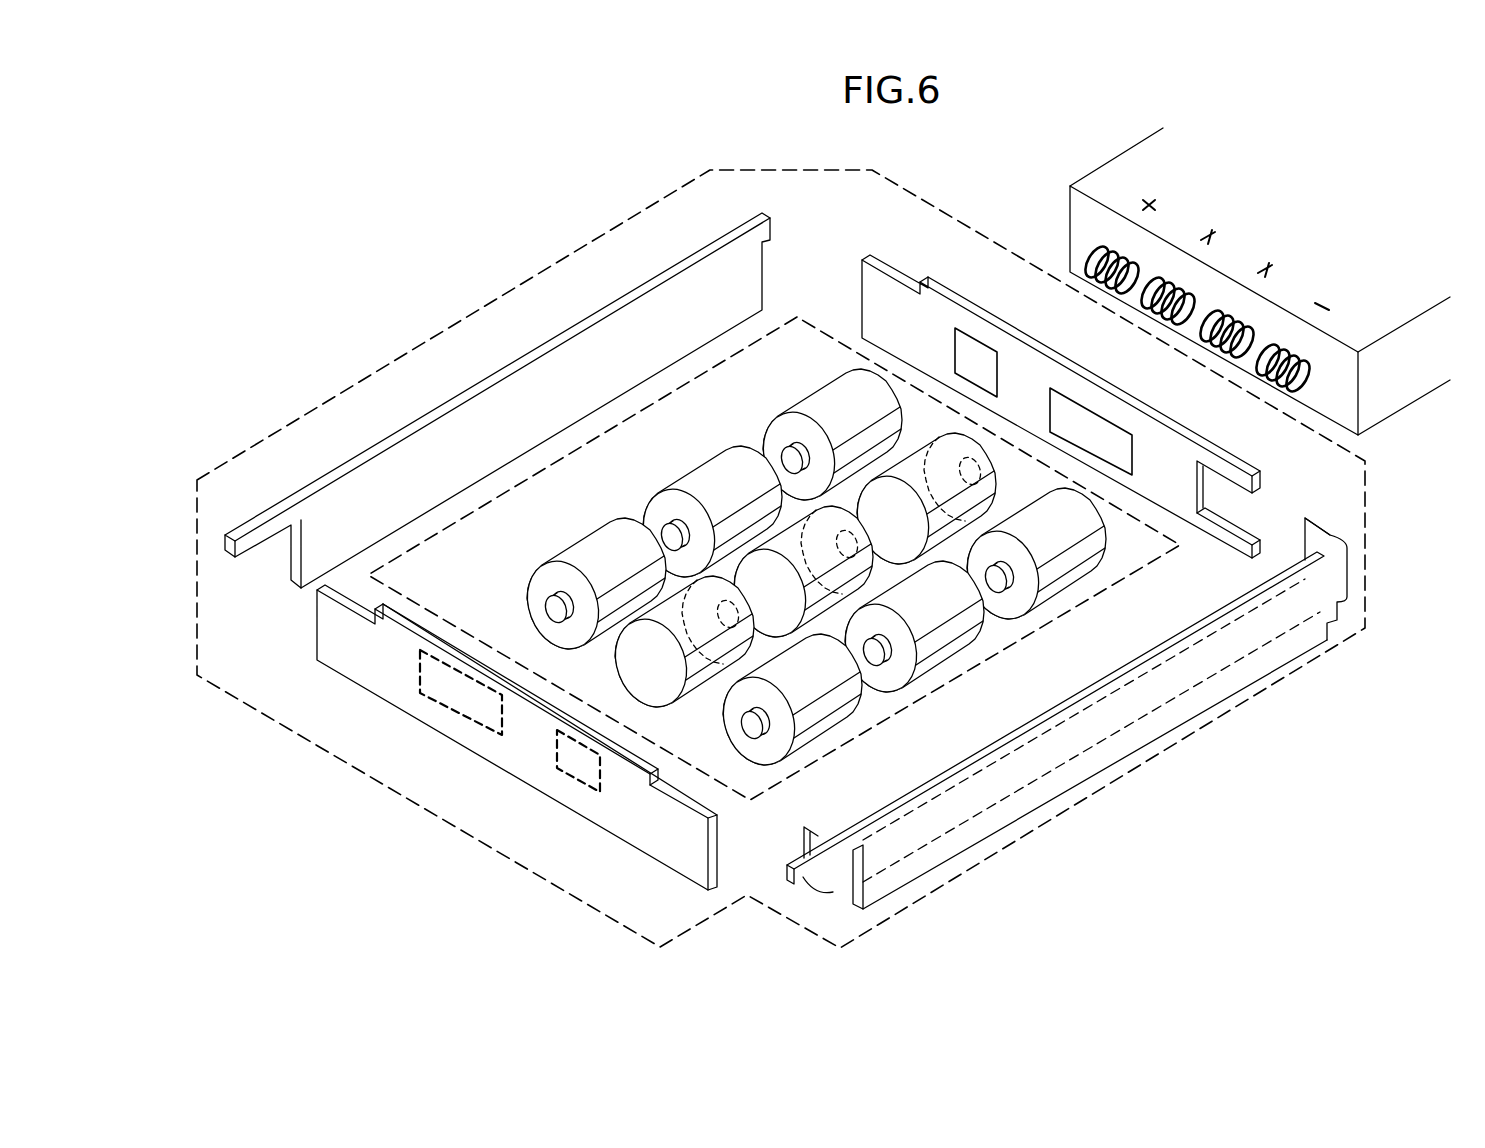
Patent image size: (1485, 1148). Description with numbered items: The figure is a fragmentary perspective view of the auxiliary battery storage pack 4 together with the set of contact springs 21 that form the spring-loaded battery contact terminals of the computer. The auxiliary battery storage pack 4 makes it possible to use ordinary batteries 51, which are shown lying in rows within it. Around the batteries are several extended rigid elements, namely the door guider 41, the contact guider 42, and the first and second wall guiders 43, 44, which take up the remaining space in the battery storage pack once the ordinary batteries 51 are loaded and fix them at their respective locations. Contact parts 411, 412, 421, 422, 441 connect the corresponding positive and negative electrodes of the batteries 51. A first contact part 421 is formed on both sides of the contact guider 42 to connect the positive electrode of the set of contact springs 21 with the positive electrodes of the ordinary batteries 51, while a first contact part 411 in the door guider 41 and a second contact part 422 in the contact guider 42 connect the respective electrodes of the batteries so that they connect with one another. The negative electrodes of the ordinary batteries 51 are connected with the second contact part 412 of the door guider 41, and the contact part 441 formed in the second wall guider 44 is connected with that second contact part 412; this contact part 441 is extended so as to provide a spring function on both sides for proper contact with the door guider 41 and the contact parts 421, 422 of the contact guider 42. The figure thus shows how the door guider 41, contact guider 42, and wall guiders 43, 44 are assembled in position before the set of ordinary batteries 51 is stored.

The auxiliary battery storage pack 4 is at (523, 283).
The set of contact springs 21 is at (1110, 250).
The door guider 41 is at (352, 658).
The first contact part 411 is at (453, 692).
The second contact part 412 is at (572, 770).
The contact guider 42 is at (1088, 404).
The first contact part 421 is at (961, 354).
The second contact part 422 is at (1077, 420).
The first wall guider 43 is at (525, 362).
The second wall guider 44 is at (1069, 692).
The contact part 441 is at (1323, 540).
The ordinary batteries 51 is at (706, 457).